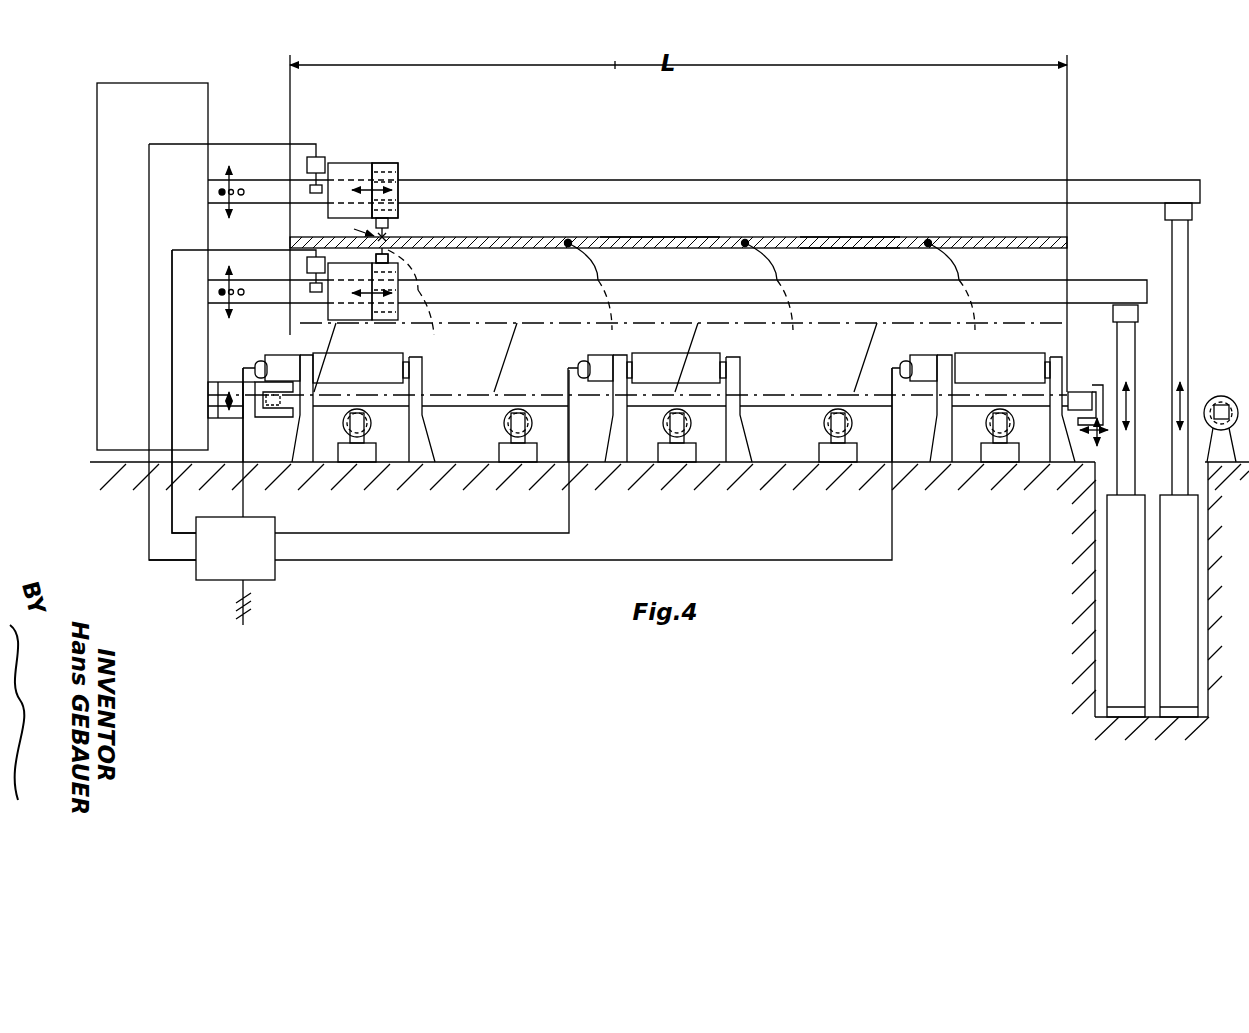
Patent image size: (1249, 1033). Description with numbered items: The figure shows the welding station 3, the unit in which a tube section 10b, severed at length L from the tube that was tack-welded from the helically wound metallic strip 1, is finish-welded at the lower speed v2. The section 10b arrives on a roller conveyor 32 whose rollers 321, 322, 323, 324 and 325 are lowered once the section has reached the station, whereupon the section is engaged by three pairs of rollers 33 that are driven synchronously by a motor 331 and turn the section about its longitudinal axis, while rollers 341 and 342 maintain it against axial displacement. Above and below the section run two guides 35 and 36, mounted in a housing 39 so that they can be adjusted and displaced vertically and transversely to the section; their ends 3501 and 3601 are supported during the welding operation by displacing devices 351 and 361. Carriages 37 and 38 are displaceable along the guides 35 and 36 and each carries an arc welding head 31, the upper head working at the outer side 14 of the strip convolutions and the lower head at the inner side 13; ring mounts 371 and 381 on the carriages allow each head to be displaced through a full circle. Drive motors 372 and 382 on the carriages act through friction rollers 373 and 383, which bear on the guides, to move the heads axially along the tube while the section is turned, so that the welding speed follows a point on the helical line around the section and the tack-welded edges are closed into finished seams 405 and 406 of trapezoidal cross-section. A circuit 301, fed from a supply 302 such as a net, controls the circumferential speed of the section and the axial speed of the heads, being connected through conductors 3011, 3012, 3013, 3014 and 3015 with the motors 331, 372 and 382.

The metallic strip or band 1 is at (1008, 243).
The welding station 3 is at (211, 103).
The tube section 10b is at (664, 237).
The lower workpiece surface 13 is at (846, 250).
The outer side 14 is at (851, 238).
The arc welding head 31 is at (400, 228).
The roller conveyor 32 is at (1221, 393).
The pairs of rollers 33 is at (388, 355).
The guide 35 is at (658, 191).
The guide 36 is at (638, 300).
The carriage 37 is at (352, 160).
The carriage 38 is at (324, 314).
The housing 39 is at (152, 266).
The circuit 301 is at (235, 548).
The supply 302 is at (250, 606).
The roller 321 is at (351, 428).
The roller sensor 322 is at (512, 428).
The roller 323 is at (671, 428).
The roller 324 is at (832, 428).
The roller 325 is at (994, 428).
The motor 331 is at (274, 368).
The roller 341 is at (278, 406).
The roller 342 is at (1084, 392).
The displacing device 351 is at (1183, 592).
The displacing device 361 is at (1128, 663).
The ring mount 371 is at (396, 172).
The drive motor 372 is at (314, 150).
The friction roller 373 is at (310, 190).
The ring mount 381 is at (398, 259).
The drive motor 382 is at (318, 257).
The friction roller 383 is at (310, 289).
The finished welded seam 405 is at (570, 247).
The finished welded seam 406 is at (571, 243).
The conductor 3011 is at (246, 502).
The conductor 3012 is at (438, 535).
The conductor 3013 is at (838, 562).
The conductor 3014 is at (172, 562).
The conductor 3015 is at (172, 517).
The end of guide 3501 is at (1162, 183).
The end of guide 3601 is at (1118, 290).